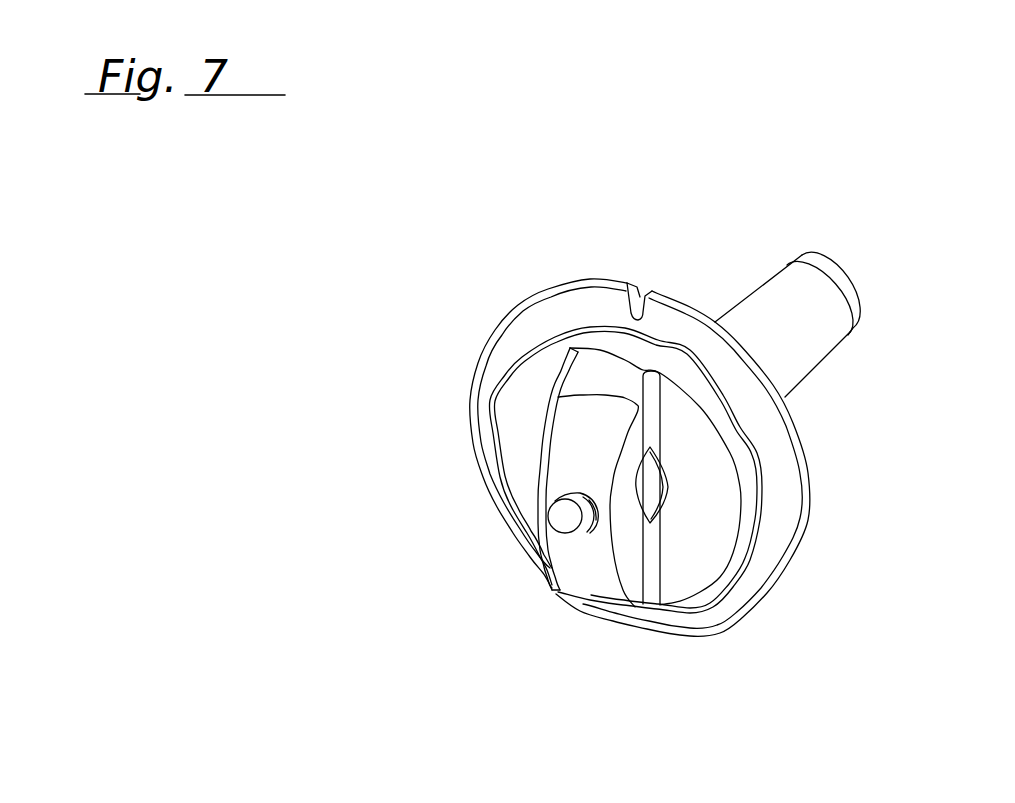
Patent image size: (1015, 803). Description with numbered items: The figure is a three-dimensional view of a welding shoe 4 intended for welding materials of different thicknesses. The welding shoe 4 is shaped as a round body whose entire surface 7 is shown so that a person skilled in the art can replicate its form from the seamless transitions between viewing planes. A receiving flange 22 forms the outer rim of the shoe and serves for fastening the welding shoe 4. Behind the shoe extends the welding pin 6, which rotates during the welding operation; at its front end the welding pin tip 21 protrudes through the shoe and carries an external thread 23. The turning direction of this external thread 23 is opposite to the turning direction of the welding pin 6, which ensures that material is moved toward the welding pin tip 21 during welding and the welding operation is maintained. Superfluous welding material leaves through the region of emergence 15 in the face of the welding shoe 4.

The welding shoe 4 is at (743, 480).
The welding pin 6 is at (795, 362).
The surface 7 is at (580, 423).
The region of emergence 15 is at (652, 508).
The welding pin tip 21 is at (560, 519).
The receiving flange 22 is at (797, 479).
The external thread 23 is at (591, 530).